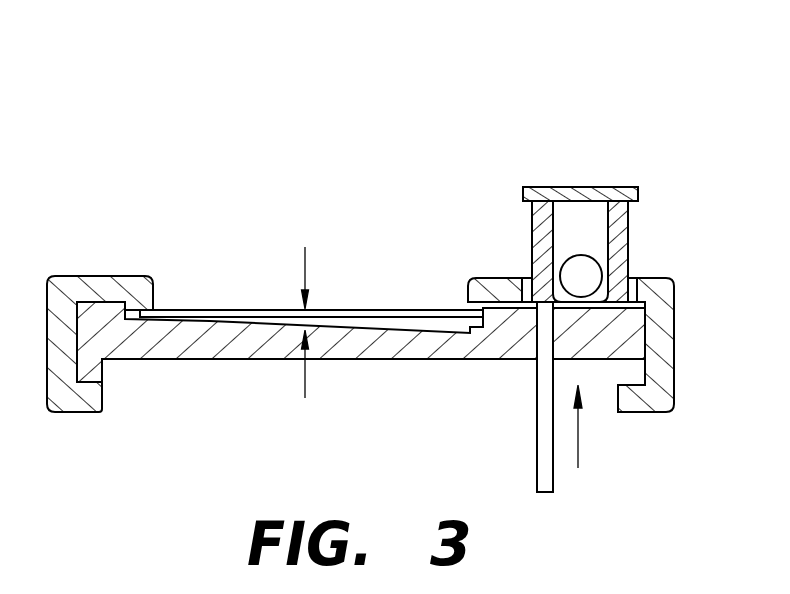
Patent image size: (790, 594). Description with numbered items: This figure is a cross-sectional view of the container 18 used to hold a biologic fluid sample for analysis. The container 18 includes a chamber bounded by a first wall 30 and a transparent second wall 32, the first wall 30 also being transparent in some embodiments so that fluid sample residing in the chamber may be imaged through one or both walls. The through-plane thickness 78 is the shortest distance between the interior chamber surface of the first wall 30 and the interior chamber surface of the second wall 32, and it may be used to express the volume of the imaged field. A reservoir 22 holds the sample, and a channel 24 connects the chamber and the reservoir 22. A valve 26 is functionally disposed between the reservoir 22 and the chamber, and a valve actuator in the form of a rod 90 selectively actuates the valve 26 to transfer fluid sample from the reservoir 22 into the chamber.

The container 18 is at (383, 284).
The reservoir 22 is at (599, 186).
The channel 24 is at (492, 310).
The valve 26 is at (519, 266).
The first wall 30 is at (373, 348).
The second wall 32 is at (365, 309).
The through-plane thickness 78 is at (302, 385).
The rod 90 is at (553, 477).